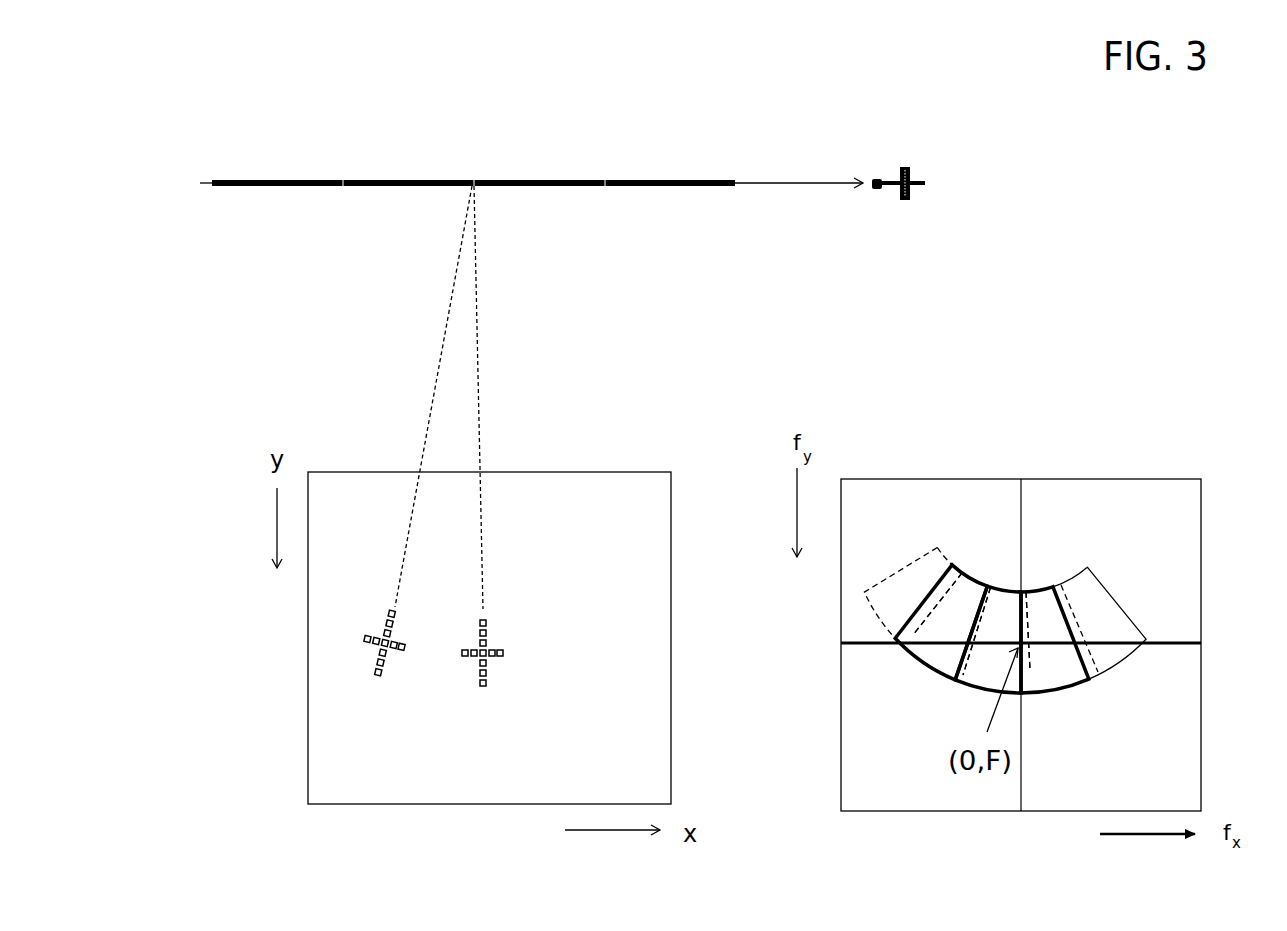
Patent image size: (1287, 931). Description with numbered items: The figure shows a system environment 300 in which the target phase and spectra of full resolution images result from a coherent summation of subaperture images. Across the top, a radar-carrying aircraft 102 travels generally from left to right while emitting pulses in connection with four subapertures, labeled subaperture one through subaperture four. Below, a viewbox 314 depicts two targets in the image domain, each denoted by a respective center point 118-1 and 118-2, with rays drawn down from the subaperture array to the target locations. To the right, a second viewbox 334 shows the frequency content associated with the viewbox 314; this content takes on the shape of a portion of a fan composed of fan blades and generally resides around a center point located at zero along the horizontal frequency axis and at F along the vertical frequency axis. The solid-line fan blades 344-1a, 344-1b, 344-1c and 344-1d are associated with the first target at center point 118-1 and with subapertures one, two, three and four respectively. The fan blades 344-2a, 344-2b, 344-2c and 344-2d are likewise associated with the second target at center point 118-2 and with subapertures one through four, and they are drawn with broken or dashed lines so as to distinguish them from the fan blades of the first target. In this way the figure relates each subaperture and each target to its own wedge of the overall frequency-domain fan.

The system environment 300 is at (252, 100).
The aircraft 102 is at (908, 167).
The viewbox 314 is at (515, 477).
The center point 118-1 is at (488, 657).
The center point 118-2 is at (388, 650).
The viewbox 334 is at (1057, 478).
The fan blade 344-1a is at (1098, 620).
The fan blade 344-1b is at (1043, 632).
The fan blade 344-1c is at (1008, 615).
The fan blade 344-1d is at (948, 625).
The fan blade 344-2a is at (1047, 618).
The fan blade 344-2b is at (1000, 625).
The fan blade 344-2c is at (962, 613).
The fan blade 344-2d is at (907, 588).